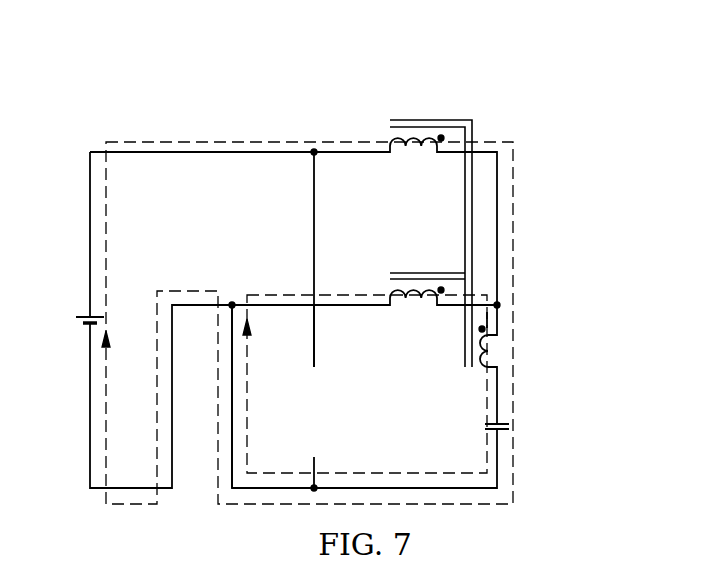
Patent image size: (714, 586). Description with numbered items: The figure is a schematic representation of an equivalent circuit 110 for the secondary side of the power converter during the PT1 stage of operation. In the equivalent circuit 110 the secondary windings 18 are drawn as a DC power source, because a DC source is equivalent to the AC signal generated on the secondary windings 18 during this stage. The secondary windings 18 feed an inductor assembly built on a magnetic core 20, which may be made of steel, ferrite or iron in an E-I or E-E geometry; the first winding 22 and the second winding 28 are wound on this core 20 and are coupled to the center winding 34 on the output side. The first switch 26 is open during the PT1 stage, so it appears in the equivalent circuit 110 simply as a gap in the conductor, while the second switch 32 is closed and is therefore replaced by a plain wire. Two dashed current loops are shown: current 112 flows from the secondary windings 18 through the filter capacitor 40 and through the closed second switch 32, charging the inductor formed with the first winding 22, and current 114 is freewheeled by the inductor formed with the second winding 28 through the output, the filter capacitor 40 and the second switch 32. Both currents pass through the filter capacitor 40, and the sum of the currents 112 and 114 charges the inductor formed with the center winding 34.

The equivalent circuit 110 is at (244, 103).
The current 112 is at (157, 142).
The current 114 is at (403, 472).
The secondary windings 18 is at (76, 319).
The magnetic core 20 is at (420, 119).
The first winding 22 is at (413, 148).
The second primary winding 28 is at (413, 300).
The center winding 34 is at (498, 345).
The filter capacitor 40 is at (509, 428).
The second switch 32 is at (232, 362).
The first switch 26 is at (315, 413).